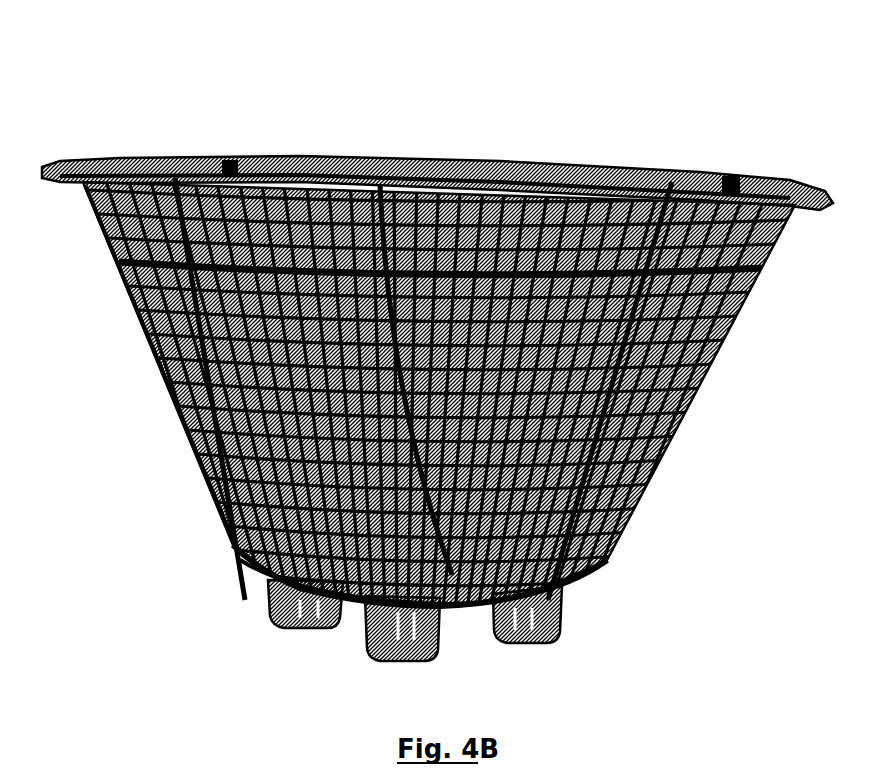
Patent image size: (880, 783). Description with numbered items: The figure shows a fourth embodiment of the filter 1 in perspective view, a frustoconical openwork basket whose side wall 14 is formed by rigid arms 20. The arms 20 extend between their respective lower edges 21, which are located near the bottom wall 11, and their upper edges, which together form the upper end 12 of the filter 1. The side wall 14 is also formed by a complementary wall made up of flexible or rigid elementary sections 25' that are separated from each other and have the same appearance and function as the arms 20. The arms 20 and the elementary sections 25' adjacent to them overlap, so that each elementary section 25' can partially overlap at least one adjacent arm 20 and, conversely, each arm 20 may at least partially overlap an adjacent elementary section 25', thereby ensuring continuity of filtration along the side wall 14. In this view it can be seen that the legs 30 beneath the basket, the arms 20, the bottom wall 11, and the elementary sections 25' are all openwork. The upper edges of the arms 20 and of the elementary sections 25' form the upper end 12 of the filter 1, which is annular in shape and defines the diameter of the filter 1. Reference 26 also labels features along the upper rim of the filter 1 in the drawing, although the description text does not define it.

The filter 1 is at (128, 82).
The bottom wall 11 is at (482, 600).
The upper end 12 is at (430, 150).
The side wall 14 is at (190, 443).
The arms 20 is at (82, 158).
The lower edges 21 is at (232, 548).
The elementary sections 25' is at (470, 154).
The reinforcing rib 26 is at (183, 166).
The legs 30 is at (312, 628).